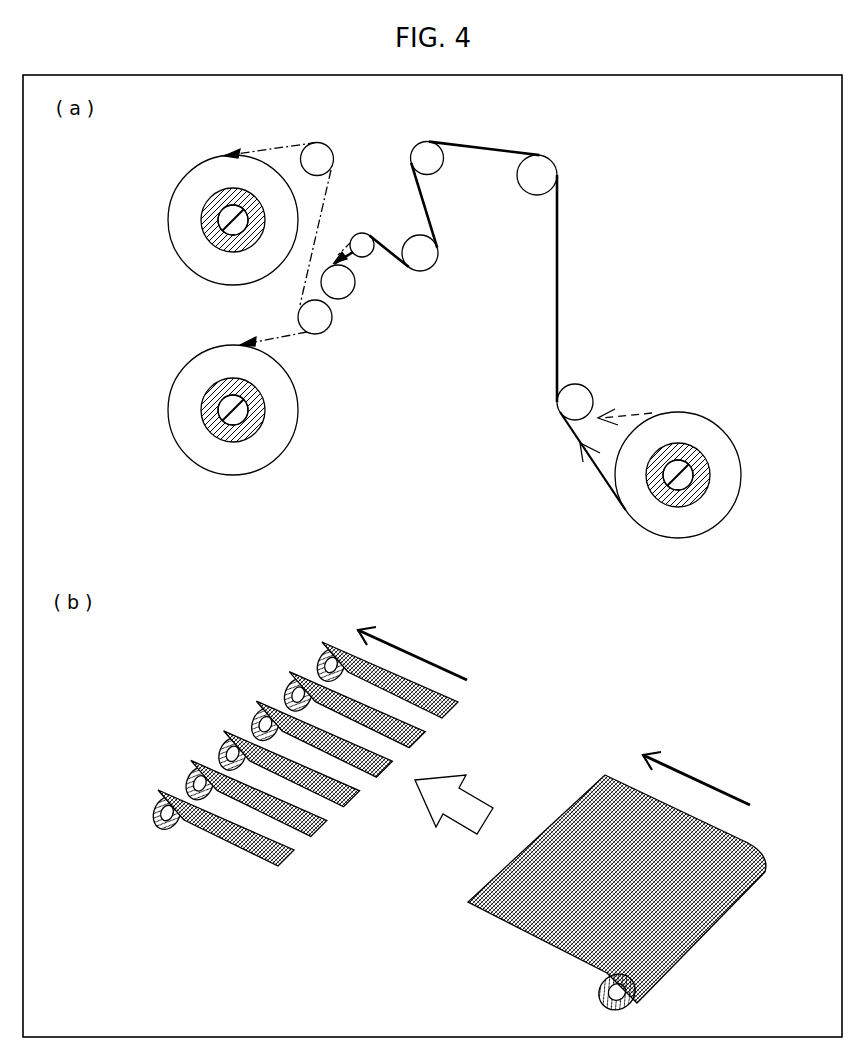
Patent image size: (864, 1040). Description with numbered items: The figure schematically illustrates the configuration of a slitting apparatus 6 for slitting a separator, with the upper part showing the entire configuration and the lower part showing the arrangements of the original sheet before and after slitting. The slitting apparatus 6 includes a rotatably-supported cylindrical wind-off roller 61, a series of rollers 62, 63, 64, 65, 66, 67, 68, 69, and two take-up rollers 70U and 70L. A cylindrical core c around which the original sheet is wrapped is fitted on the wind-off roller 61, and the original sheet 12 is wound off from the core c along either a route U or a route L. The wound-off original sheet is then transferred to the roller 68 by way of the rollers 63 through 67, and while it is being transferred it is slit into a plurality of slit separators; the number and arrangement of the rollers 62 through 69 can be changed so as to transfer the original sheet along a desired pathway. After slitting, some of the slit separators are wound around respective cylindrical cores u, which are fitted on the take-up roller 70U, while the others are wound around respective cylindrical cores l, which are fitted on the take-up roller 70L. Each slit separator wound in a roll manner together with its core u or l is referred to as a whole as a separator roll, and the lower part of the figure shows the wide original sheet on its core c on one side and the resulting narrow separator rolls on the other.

The slitting apparatus 6 is at (713, 139).
The web 12 is at (558, 266).
The wind-off roller 61 is at (661, 485).
The roller 62 is at (578, 390).
The roller 63 is at (558, 167).
The roller 64 is at (422, 151).
The roller 65 is at (438, 253).
The roller 66 is at (361, 240).
The roller 67 is at (344, 289).
The roller 68 is at (318, 327).
The roller 69 is at (321, 151).
The take-up roller 70U is at (213, 232).
The take-up roller 70L is at (213, 422).
The cylindrical core u is at (218, 224).
The cylindrical core l is at (218, 410).
The cylindrical core c is at (684, 480).
The route U is at (625, 408).
The route L is at (588, 469).